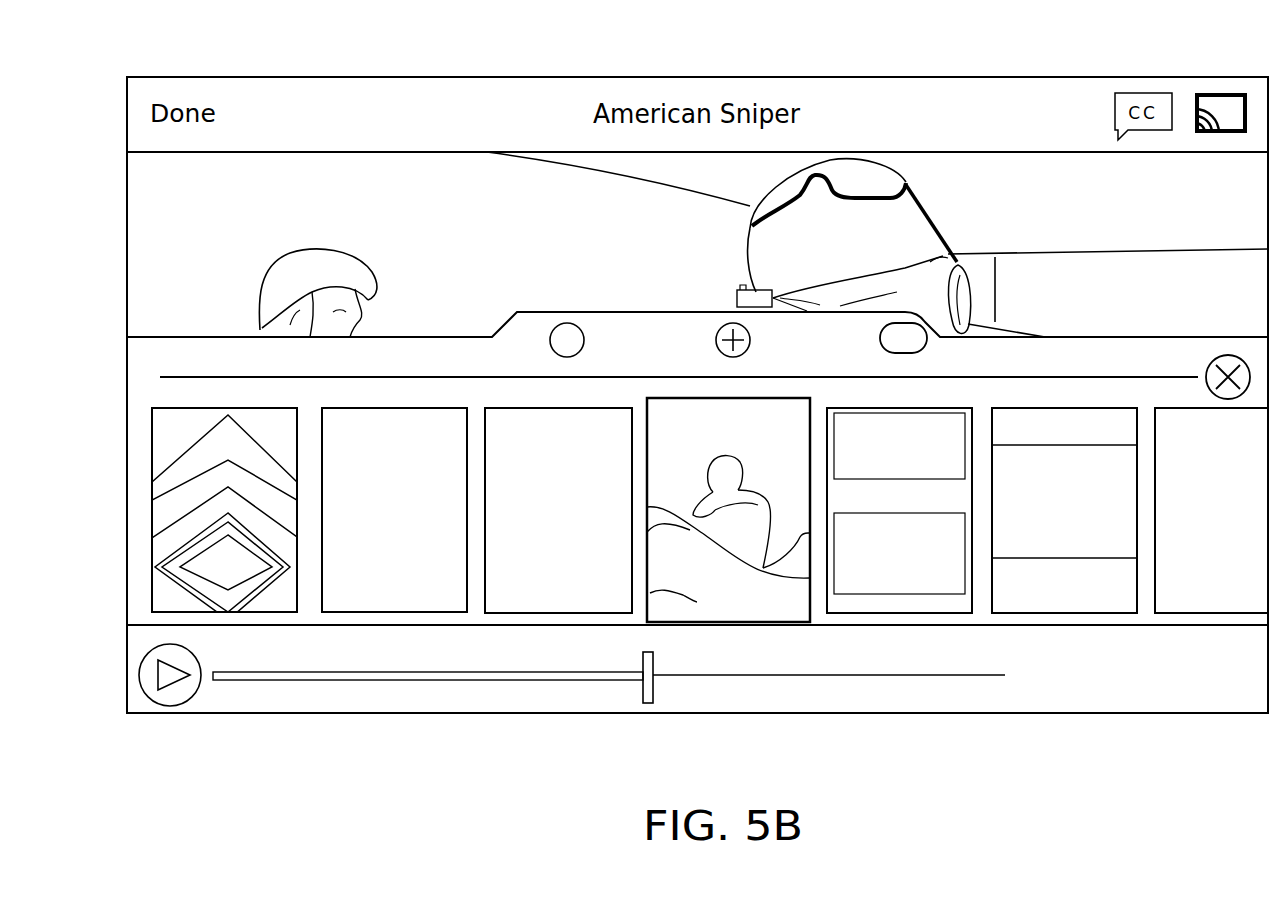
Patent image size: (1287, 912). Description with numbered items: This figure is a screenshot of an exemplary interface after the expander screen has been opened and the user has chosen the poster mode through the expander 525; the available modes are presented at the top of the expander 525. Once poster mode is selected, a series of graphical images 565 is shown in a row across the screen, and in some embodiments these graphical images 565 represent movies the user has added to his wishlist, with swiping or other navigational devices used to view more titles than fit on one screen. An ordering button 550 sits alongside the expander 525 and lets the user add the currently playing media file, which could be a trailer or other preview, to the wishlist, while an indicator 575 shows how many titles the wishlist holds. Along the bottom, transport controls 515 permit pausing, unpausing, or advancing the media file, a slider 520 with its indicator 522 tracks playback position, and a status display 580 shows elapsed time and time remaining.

The transport controls 515 is at (172, 680).
The slider 520 is at (381, 672).
The indicator 522 is at (650, 690).
The expander 525 is at (527, 310).
The ordering button 550 is at (727, 330).
The graphical images 565 is at (140, 398).
The indicator 575 is at (900, 324).
The status display 580 is at (1242, 693).